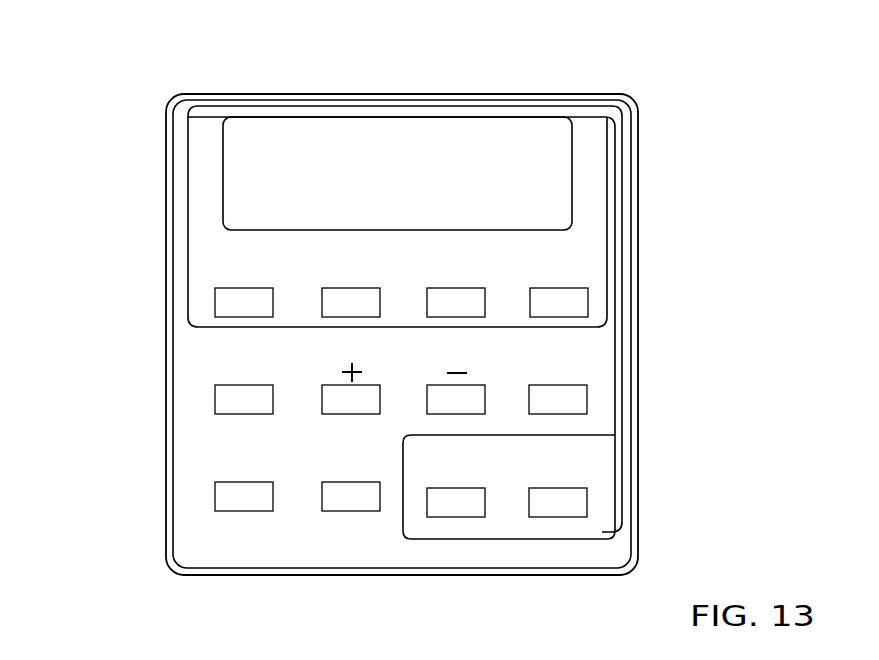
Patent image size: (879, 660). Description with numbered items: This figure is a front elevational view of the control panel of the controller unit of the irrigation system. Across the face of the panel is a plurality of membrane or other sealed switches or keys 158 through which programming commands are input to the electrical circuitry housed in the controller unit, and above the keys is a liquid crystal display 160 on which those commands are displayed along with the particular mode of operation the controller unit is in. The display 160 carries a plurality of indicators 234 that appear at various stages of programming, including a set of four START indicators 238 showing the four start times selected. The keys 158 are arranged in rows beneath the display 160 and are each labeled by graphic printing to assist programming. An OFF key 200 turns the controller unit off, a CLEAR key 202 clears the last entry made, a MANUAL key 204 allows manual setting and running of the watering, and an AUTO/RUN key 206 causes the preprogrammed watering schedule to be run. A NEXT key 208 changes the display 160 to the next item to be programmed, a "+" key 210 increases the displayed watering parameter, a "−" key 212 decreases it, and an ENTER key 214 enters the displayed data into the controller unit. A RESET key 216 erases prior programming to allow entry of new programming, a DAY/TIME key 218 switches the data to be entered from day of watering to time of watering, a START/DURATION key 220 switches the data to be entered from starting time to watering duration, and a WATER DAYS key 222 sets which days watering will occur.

The sealed keys 158 is at (135, 565).
The liquid crystal display 160 is at (583, 108).
The OFF key 200 is at (217, 301).
The CLEAR key 202 is at (322, 300).
The MANUAL key 204 is at (427, 300).
The AUTO/RUN key 206 is at (580, 305).
The NEXT key 208 is at (217, 401).
The "+" key 210 is at (362, 400).
The "−" key 212 is at (468, 400).
The ENTER key 214 is at (580, 402).
The RESET key 216 is at (240, 503).
The DAY/TIME key 218 is at (348, 503).
The START/DURATION key 220 is at (457, 505).
The WATER DAYS key 222 is at (558, 508).
The indicators 234 is at (563, 76).
The START indicators 238 is at (650, 130).